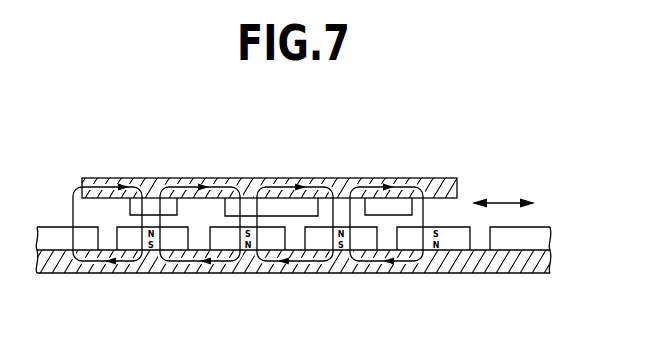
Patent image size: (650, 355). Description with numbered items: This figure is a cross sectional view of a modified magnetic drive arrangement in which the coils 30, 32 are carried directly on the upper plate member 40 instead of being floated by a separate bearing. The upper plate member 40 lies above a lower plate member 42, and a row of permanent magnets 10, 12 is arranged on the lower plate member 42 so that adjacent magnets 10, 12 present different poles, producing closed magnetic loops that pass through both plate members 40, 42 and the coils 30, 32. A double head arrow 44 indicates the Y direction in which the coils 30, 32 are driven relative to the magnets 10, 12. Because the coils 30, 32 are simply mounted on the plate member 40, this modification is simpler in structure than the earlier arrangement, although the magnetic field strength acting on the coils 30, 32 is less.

The magnet 10 is at (133, 242).
The magnet 12 is at (222, 240).
The coil 30 is at (247, 205).
The coil 32 is at (375, 203).
The upper plate member 40 is at (442, 185).
The lower plate member 42 is at (440, 262).
The double head arrow 44 is at (505, 200).